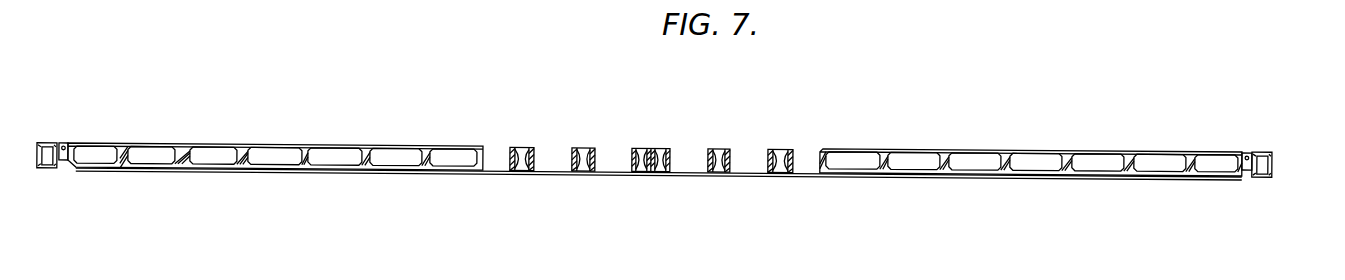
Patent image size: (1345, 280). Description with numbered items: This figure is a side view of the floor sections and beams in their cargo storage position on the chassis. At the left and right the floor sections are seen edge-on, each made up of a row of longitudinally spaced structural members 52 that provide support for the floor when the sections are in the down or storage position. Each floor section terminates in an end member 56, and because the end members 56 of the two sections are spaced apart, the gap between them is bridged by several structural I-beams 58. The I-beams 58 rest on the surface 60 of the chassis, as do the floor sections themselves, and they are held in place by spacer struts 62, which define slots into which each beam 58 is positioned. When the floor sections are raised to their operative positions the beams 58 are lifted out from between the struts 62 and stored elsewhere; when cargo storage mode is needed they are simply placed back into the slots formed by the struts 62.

The structural member 52 is at (880, 151).
The end member 56 is at (822, 149).
The structural I-beam 58 is at (525, 147).
The surface 60 is at (543, 168).
The spacer strut 62 is at (574, 155).